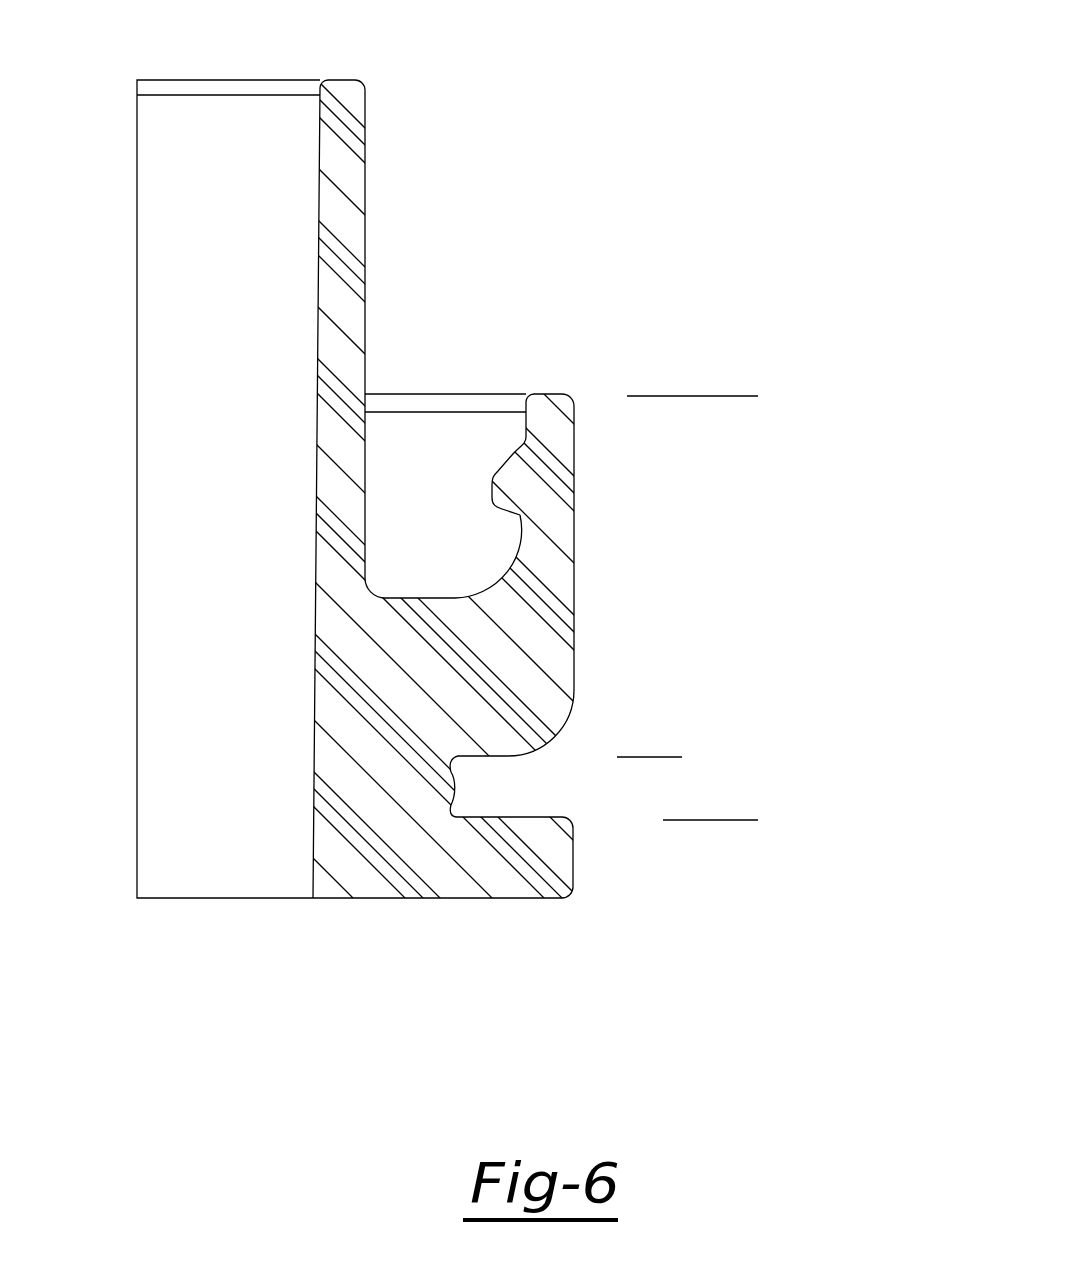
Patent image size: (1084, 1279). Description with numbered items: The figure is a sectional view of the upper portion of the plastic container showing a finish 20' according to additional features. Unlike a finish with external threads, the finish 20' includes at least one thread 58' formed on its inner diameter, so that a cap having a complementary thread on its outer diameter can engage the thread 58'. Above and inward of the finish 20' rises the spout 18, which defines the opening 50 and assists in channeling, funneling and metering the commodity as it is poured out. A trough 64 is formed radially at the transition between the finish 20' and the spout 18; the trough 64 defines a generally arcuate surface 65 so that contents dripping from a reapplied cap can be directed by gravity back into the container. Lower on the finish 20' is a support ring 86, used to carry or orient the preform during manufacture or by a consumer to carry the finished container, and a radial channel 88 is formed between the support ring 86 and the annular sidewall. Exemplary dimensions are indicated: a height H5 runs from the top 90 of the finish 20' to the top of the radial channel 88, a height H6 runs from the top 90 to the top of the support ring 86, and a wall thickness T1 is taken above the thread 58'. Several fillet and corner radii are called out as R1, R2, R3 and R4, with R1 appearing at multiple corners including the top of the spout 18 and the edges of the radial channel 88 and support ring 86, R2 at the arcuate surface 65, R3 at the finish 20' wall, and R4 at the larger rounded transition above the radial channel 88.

The finish 20' is at (625, 616).
The opening 50 is at (165, 122).
The spout 18 is at (370, 135).
The trough 64 is at (425, 403).
The top 90 is at (548, 396).
The thread 58' is at (449, 465).
The arcuate surface 65 is at (423, 597).
The radial channel 88 is at (452, 768).
The support ring 86 is at (575, 865).
The radius R1 is at (668, 937).
The radius R2 is at (515, 543).
The radius R3 is at (575, 500).
The radius R4 is at (553, 737).
The wall thickness T1 is at (622, 437).
The height H5 is at (656, 396).
The height H6 is at (725, 396).